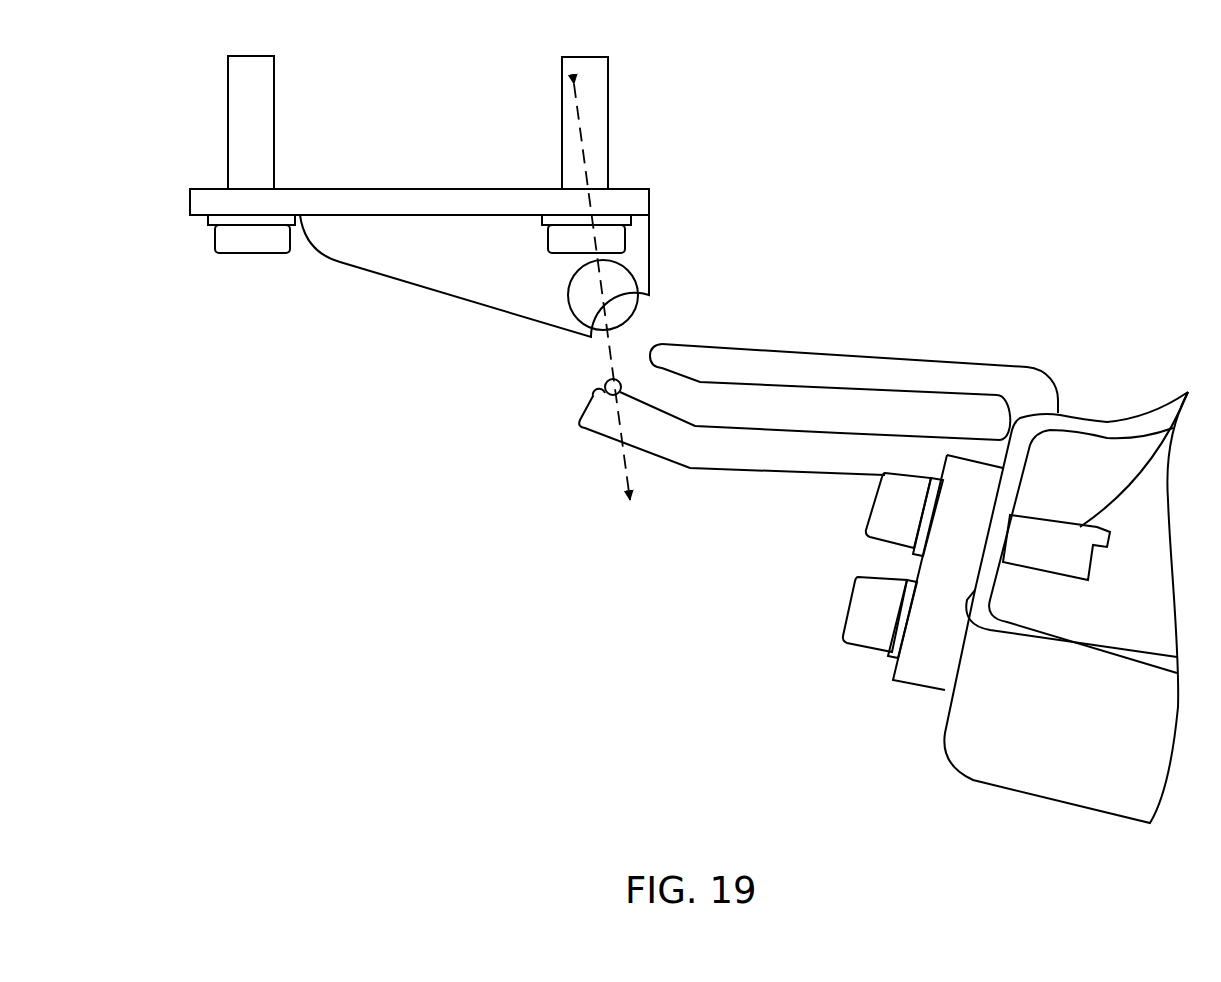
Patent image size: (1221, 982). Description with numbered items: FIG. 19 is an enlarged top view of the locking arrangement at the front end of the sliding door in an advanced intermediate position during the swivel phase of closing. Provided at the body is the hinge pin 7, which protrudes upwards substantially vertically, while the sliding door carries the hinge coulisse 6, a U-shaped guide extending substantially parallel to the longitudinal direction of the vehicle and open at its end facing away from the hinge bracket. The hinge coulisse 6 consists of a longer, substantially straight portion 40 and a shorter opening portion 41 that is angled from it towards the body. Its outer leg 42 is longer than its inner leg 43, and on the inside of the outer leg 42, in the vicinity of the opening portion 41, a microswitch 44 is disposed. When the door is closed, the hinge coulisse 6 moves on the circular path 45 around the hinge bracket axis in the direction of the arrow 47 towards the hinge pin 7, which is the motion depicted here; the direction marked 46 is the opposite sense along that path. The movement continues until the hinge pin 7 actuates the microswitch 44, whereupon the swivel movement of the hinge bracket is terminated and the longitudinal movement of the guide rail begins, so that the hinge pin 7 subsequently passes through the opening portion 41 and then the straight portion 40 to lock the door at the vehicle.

The hinge coulisse 6 is at (914, 322).
The hinge pin 7 is at (623, 283).
The straight portion 40 is at (789, 454).
The opening portion 41 is at (854, 370).
The outer leg 42 is at (750, 458).
The inner leg 43 is at (777, 365).
The microswitch 44 is at (593, 395).
The circular path 45 is at (608, 353).
The release direction 46 is at (620, 480).
The arrow 47 is at (585, 132).